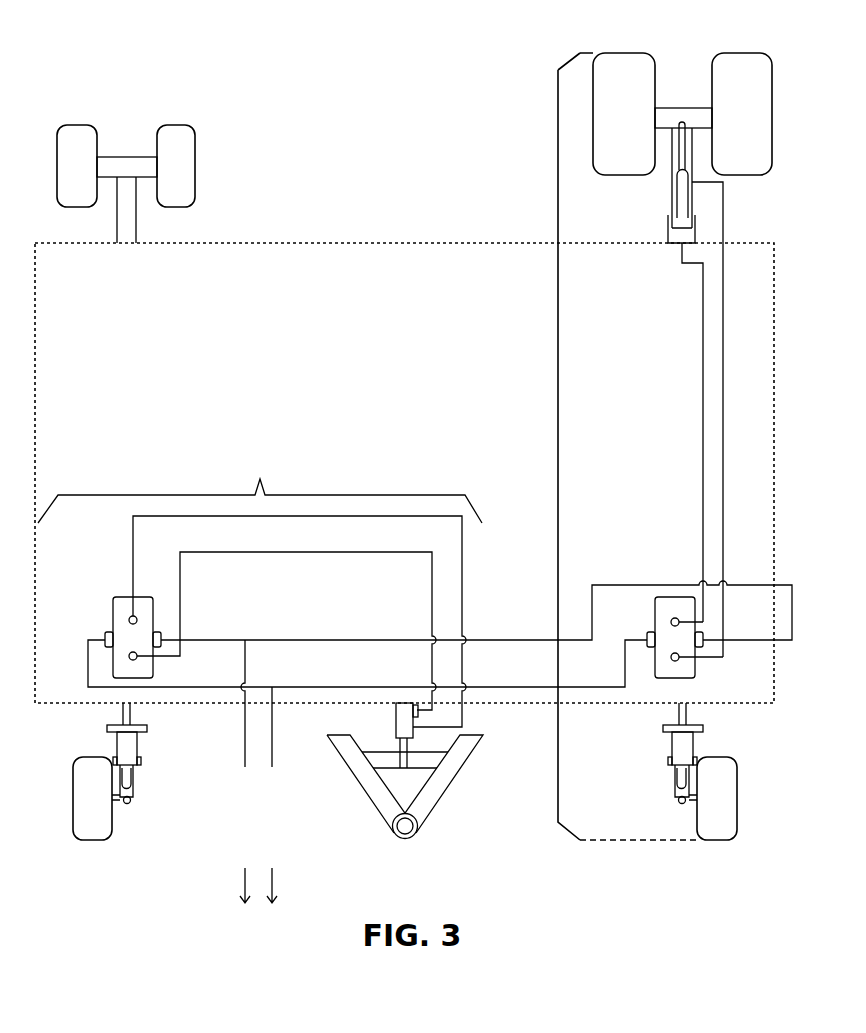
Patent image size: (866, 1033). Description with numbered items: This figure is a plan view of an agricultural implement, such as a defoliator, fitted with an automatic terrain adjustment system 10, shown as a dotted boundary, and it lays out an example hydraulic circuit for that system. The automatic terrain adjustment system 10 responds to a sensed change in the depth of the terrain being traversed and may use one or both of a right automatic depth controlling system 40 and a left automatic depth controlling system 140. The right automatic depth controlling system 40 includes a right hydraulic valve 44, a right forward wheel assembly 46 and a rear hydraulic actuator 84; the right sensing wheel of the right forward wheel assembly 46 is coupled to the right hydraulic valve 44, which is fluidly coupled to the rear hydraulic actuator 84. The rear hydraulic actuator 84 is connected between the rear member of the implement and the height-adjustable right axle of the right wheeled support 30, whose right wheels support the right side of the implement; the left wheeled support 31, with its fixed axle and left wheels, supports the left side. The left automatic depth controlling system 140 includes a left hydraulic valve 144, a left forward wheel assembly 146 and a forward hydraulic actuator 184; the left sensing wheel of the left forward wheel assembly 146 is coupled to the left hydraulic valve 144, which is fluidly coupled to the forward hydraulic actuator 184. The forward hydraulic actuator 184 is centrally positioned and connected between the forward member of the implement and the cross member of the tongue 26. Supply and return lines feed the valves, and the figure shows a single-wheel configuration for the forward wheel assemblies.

The automatic terrain adjustment system 10 is at (407, 175).
The tongue 26 is at (372, 803).
The right wheeled support 30 is at (778, 58).
The left wheeled support 31 is at (199, 118).
The right automatic depth controlling system 40 is at (558, 440).
The right hydraulic valve 44 is at (660, 678).
The right forward wheel assembly 46 is at (720, 848).
The rear hydraulic actuator 84 is at (672, 193).
The left automatic depth controlling system 140 is at (415, 678).
The left hydraulic valve 144 is at (118, 597).
The left forward wheel assembly 146 is at (88, 848).
The forward hydraulic actuator 184 is at (390, 727).